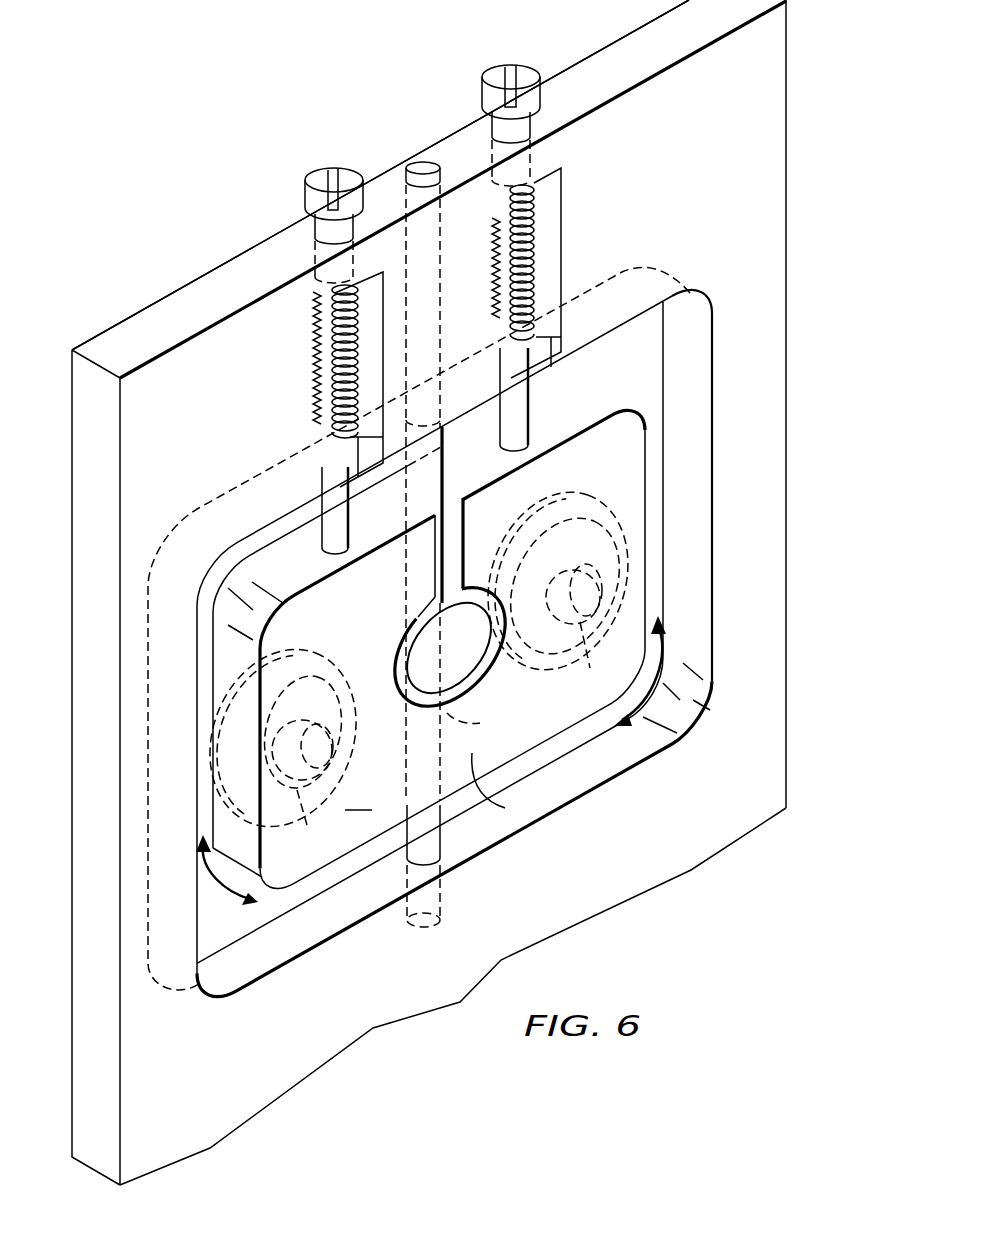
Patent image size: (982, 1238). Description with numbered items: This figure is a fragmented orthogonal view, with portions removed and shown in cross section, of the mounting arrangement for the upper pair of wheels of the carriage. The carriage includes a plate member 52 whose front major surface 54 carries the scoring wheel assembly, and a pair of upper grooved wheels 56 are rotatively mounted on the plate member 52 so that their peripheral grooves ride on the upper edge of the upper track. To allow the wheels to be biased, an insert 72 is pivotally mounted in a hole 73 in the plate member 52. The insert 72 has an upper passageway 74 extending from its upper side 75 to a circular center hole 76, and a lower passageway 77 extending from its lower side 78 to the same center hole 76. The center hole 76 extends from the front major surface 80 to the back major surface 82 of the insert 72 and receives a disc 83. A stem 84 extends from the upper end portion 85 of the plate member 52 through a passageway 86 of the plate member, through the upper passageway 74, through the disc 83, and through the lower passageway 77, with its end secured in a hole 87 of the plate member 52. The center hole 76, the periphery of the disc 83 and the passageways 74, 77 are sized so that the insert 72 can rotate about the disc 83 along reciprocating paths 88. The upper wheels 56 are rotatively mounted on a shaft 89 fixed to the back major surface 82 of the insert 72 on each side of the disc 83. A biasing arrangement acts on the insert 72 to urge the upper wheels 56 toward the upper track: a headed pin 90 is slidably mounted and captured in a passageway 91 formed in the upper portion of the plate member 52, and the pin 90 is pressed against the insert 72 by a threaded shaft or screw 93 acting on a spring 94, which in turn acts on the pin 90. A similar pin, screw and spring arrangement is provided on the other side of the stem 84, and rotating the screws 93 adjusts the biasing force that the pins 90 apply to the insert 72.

The plate member 52 is at (133, 296).
The front major surface 54 is at (763, 336).
The upper grooved wheels 56 is at (418, 664).
The insert 72 is at (647, 538).
The hole 73 is at (697, 430).
The upper passageway 74 is at (463, 547).
The upper side 75 is at (273, 565).
The circular center hole 76 is at (412, 637).
The lower passageway 77 is at (462, 722).
The lower side 78 is at (498, 772).
The front major surface 80 is at (358, 796).
The back major surface 82 is at (213, 655).
The disc 83 is at (467, 657).
The stem 84 is at (445, 262).
The upper end portion 85 is at (228, 283).
The passageway 86 is at (440, 308).
The hole 87 is at (406, 855).
The reciprocating paths 88 is at (220, 885).
The shaft 89 is at (300, 674).
The headed pin 90 is at (330, 515).
The passageway 91 is at (370, 312).
The screw 93 is at (323, 173).
The spring 94 is at (353, 358).